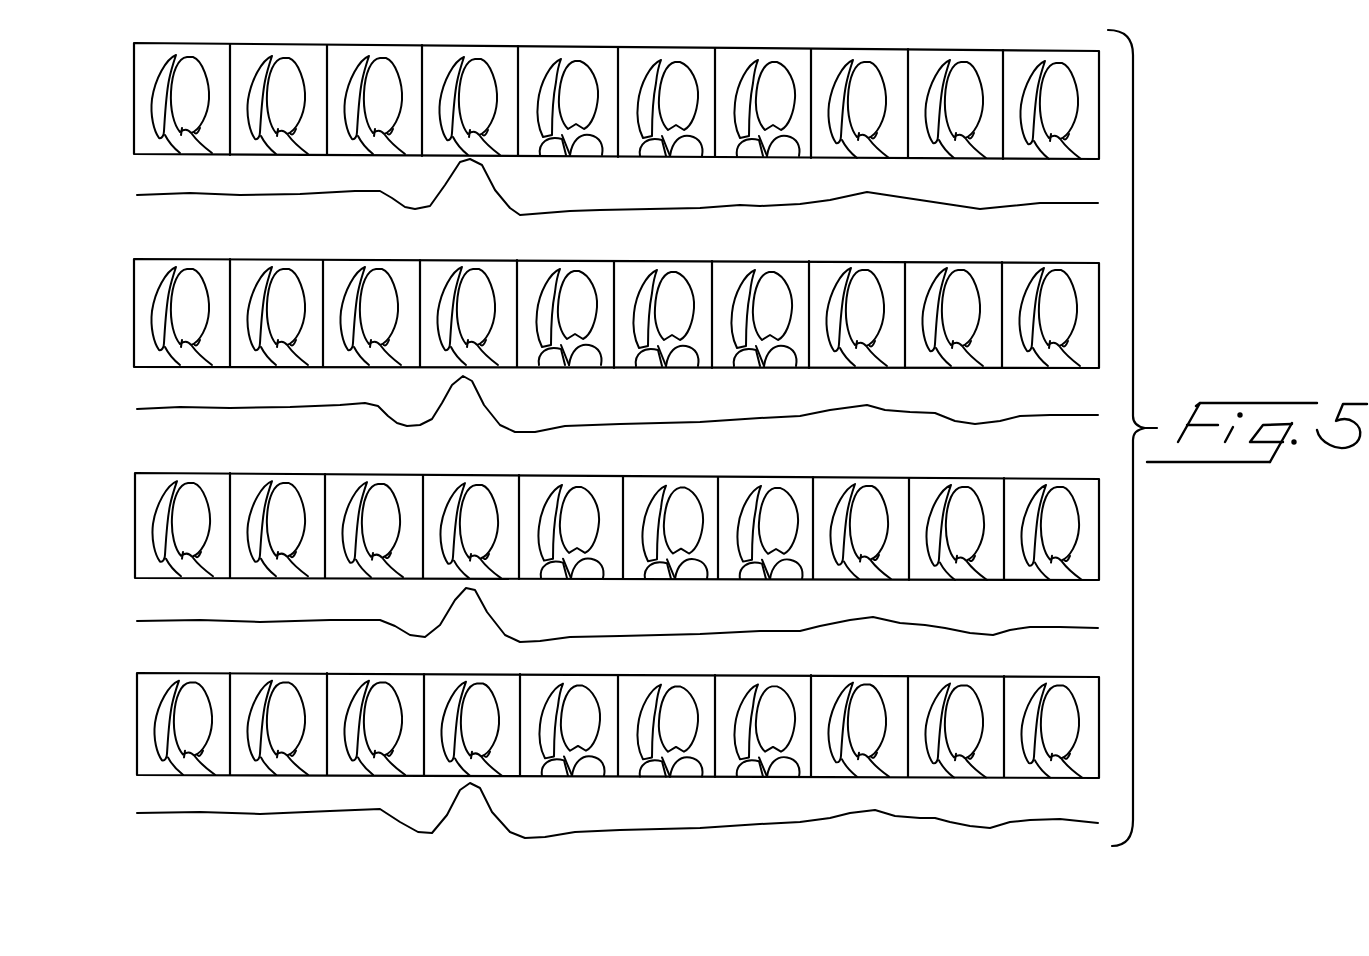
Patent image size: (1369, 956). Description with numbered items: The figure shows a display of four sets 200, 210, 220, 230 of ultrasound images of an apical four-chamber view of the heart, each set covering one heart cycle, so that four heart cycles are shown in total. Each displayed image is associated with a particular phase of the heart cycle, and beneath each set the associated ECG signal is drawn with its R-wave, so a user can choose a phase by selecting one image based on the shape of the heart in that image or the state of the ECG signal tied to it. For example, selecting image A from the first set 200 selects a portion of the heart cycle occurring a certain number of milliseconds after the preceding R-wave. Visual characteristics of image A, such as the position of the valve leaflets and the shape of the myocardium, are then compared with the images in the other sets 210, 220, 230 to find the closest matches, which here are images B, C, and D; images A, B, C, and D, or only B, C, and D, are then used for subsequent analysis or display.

The set of ultrasound images 200 is at (575, 130).
The set of ultrasound images 210 is at (570, 345).
The set of ultrasound images 220 is at (567, 562).
The set of ultrasound images 230 is at (566, 759).
The image A is at (605, 155).
The image B is at (602, 368).
The image C is at (610, 579).
The image D is at (603, 778).